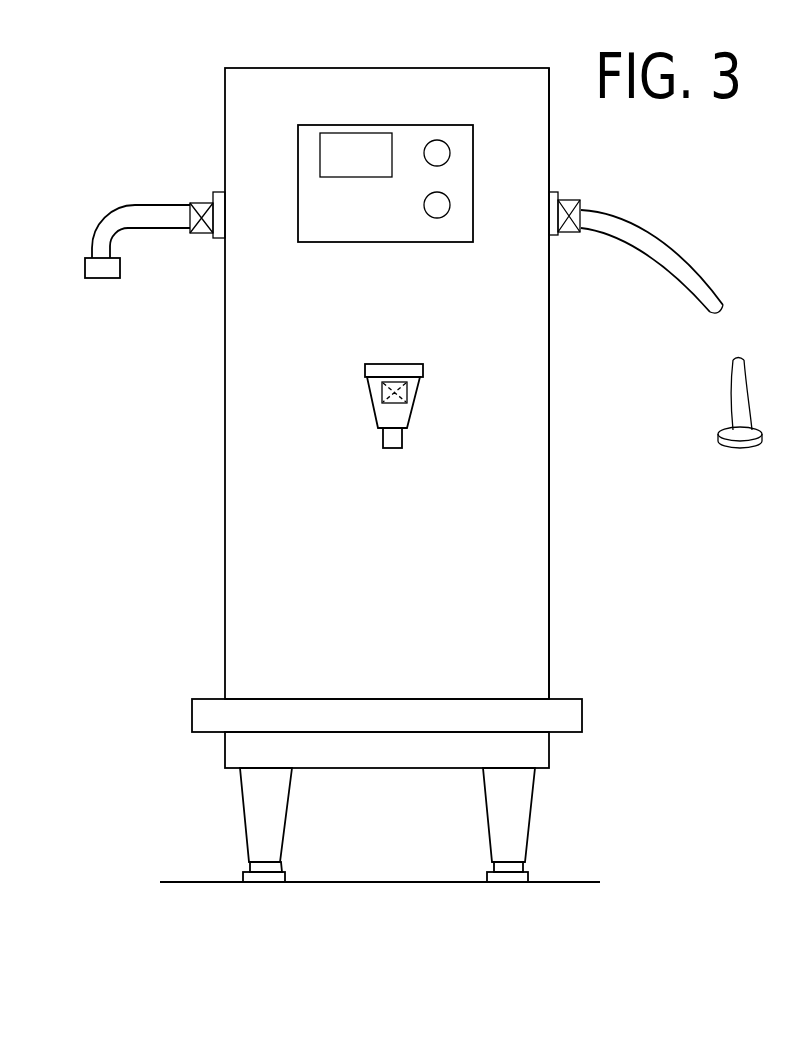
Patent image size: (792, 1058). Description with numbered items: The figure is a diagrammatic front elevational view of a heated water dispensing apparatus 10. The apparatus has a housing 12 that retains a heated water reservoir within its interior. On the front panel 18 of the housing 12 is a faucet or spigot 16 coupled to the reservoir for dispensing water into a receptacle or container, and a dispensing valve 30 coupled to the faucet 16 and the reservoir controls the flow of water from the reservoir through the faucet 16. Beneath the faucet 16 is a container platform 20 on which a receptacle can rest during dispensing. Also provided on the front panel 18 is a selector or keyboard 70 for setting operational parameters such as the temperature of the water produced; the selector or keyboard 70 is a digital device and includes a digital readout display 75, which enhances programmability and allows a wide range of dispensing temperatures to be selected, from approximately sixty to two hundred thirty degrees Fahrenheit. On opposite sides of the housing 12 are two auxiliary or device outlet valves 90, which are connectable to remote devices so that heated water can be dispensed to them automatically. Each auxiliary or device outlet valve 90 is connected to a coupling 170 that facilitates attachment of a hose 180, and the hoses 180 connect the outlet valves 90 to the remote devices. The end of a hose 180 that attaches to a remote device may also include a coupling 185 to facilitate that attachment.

The heated water dispensing apparatus 10 is at (243, 66).
The housing 12 is at (553, 410).
The faucet or spigot 16 is at (374, 427).
The front panel 18 is at (536, 558).
The container platform 20 is at (572, 726).
The dispensing valve 30 is at (380, 396).
The selector or keyboard 70 is at (305, 215).
The digital readout display 75 is at (331, 136).
The auxiliary or device outlet valve 90 is at (206, 203).
The coupling 170 is at (577, 238).
The hose 180 is at (138, 210).
The coupling 185 is at (98, 280).